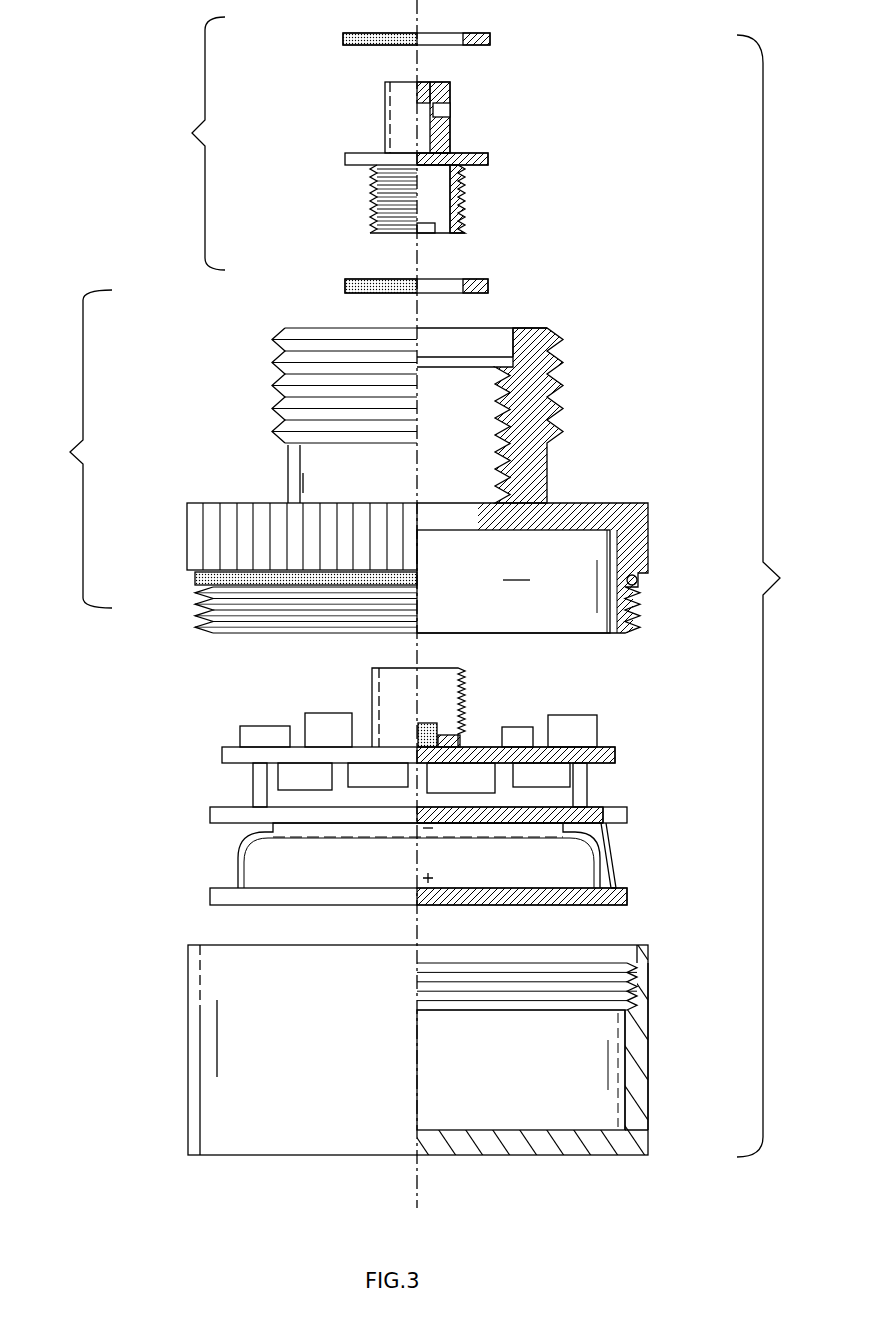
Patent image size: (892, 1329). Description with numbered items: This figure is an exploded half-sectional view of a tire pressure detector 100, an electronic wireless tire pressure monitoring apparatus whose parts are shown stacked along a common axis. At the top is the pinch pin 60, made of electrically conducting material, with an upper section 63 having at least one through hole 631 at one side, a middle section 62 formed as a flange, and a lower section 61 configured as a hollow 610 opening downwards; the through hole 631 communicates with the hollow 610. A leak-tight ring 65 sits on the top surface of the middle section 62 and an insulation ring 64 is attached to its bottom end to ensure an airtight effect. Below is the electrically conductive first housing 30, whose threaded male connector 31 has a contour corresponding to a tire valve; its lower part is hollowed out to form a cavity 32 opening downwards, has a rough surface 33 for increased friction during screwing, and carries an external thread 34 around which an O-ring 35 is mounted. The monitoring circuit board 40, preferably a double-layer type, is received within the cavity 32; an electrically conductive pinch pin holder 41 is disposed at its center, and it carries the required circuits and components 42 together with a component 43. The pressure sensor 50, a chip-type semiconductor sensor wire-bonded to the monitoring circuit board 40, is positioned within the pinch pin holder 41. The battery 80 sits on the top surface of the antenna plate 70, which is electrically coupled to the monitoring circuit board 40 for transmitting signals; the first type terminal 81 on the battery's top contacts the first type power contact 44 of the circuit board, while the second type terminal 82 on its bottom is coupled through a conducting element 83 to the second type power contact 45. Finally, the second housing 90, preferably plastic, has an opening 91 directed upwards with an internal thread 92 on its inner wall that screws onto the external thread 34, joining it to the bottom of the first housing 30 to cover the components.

The tire pressure detector 100 is at (783, 596).
The pinch pin 60 is at (187, 143).
The leak-tight ring 65 is at (347, 36).
The upper section 63 is at (393, 105).
The through hole 631 is at (448, 110).
The middle section 62 is at (367, 156).
The lower section 61 is at (372, 208).
The hollow 610 is at (443, 200).
The insulation ring 64 is at (353, 280).
The first housing 30 is at (70, 449).
The threaded male connector 31 is at (480, 408).
The cavity 32 is at (532, 568).
The rough surface 33 is at (262, 520).
The external thread 34 is at (227, 608).
The O-ring 35 is at (237, 577).
The monitoring circuit board 40 is at (213, 812).
The pinch pin holder 41 is at (387, 700).
The circuits and components 42 is at (555, 777).
The contact 43 is at (463, 731).
The pressure sensor 50 is at (430, 723).
The first type power contact 44 is at (560, 826).
The second type power contact 45 is at (610, 807).
The conducting element 83 is at (612, 848).
The battery 80 is at (257, 860).
The first type terminal 81 is at (467, 830).
The second type terminal 82 is at (523, 883).
The antenna plate 70 is at (240, 905).
The second housing 90 is at (223, 1053).
The opening 91 is at (597, 953).
The internal thread 92 is at (640, 1002).